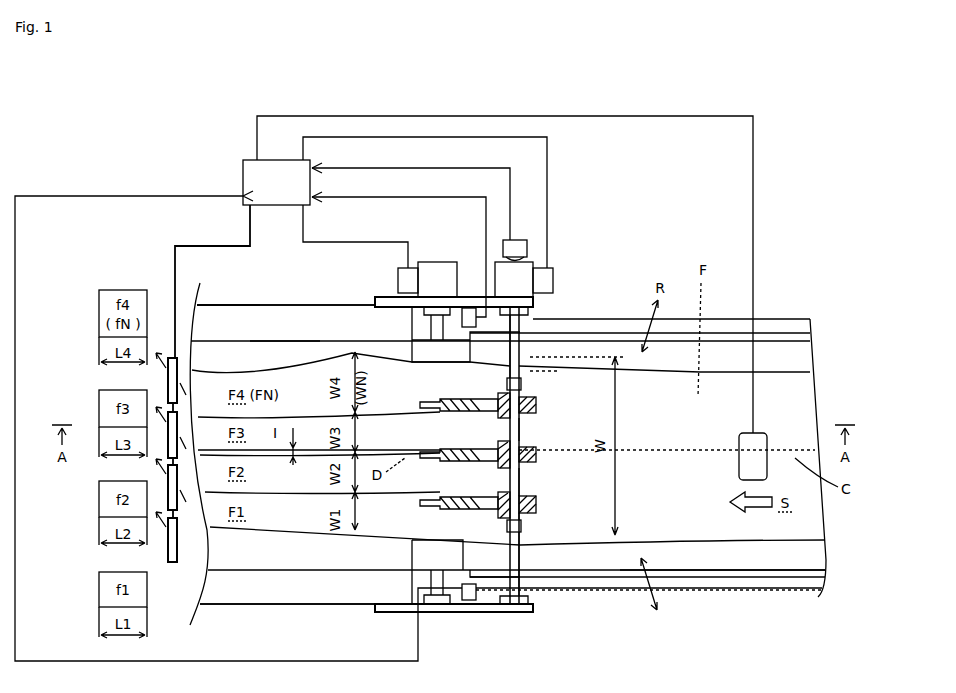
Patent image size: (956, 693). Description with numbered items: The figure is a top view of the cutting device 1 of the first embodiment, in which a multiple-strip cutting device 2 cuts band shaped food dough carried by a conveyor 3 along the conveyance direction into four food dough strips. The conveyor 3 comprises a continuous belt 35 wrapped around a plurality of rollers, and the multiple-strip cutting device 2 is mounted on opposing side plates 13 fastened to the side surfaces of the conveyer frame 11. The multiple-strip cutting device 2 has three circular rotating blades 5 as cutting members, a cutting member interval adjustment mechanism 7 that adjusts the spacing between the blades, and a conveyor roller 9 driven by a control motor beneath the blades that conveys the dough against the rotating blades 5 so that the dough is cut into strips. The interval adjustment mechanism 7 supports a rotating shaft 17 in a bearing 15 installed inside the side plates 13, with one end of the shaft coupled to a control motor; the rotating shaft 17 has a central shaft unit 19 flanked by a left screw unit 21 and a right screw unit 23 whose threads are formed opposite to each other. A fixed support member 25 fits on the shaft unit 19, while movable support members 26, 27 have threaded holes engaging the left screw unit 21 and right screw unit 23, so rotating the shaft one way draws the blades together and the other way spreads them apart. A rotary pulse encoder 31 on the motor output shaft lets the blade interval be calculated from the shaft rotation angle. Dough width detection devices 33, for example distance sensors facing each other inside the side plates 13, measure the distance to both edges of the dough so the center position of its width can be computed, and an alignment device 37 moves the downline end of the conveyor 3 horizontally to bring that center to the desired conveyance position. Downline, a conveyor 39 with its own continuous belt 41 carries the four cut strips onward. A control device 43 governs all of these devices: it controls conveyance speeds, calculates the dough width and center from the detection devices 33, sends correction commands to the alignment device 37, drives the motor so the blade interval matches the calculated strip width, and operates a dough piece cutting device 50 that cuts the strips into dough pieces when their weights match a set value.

The cutting device 1 is at (659, 245).
The multiple-strip cutting device 2 is at (560, 609).
The conveyor 3 is at (768, 572).
The rotating blades 5 is at (433, 414).
The cutting member interval adjustment mechanism 7 is at (541, 525).
The conveyor roller 9 is at (428, 553).
The conveyer frame 11 is at (330, 317).
The side plates 13 is at (392, 302).
The bearing 15 is at (545, 308).
The rotating shaft 17 is at (548, 338).
The shaft unit 19 is at (522, 475).
The left screw unit 21 is at (522, 492).
The right screw unit 23 is at (522, 425).
The fixed support member 25 is at (498, 462).
The movable support member 26 is at (500, 512).
The movable support member 27 is at (495, 412).
The pulse encoder 31 is at (520, 245).
The dough width detection devices 33 is at (468, 312).
The belt 35 is at (733, 558).
The alignment device 37 is at (770, 447).
The conveyor 39 is at (238, 317).
The belt 41 is at (284, 350).
The control device 43 is at (288, 191).
The dough piece cutting device 50 is at (173, 356).